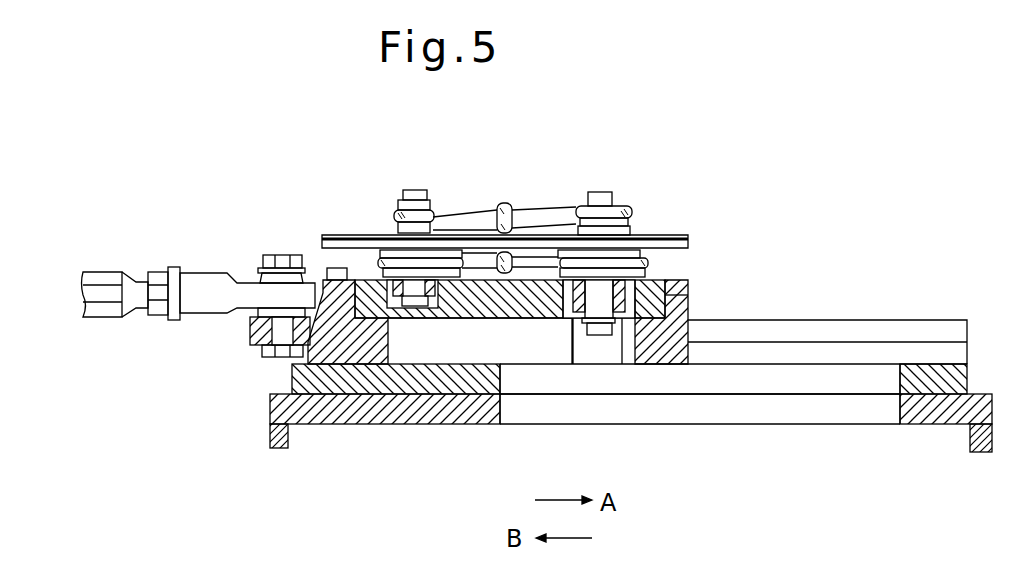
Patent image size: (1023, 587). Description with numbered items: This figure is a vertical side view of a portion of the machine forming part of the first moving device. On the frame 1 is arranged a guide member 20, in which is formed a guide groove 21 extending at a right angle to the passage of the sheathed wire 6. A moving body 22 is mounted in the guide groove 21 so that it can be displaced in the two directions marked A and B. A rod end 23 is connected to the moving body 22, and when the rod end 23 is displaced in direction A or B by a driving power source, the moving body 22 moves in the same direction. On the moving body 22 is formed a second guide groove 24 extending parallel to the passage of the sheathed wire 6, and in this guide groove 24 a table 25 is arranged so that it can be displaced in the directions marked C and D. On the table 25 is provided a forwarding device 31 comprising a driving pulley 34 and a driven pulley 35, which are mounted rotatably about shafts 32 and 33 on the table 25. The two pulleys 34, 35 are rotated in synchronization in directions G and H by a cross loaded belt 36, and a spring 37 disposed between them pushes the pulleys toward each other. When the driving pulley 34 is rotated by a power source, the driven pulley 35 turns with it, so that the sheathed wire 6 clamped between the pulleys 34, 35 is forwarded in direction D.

The frame 1 is at (980, 400).
The sheathed wire 6 is at (505, 203).
The guide member 20 is at (933, 373).
The guide groove 21 is at (850, 348).
The moving body 22 is at (690, 303).
The rod end 23 is at (210, 283).
The guide groove 24 is at (357, 278).
The table 25 is at (518, 317).
The forwarding device 31 is at (627, 204).
The shaft 32 is at (600, 190).
The shaft 33 is at (415, 190).
The driving pulley 34 is at (662, 240).
The driven pulley 35 is at (342, 235).
The cross loaded belt 36 is at (480, 268).
The spring 37 is at (548, 210).